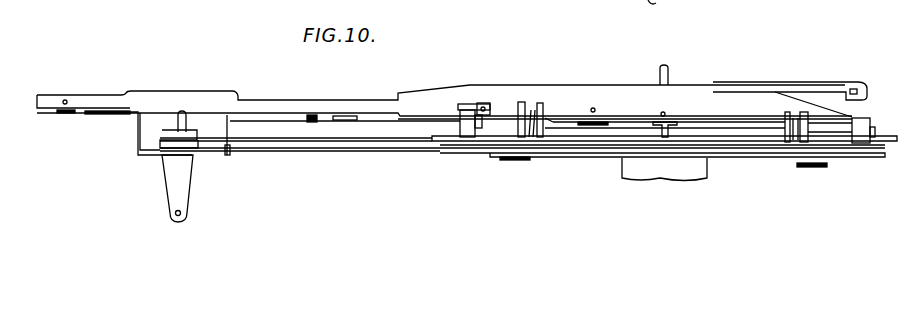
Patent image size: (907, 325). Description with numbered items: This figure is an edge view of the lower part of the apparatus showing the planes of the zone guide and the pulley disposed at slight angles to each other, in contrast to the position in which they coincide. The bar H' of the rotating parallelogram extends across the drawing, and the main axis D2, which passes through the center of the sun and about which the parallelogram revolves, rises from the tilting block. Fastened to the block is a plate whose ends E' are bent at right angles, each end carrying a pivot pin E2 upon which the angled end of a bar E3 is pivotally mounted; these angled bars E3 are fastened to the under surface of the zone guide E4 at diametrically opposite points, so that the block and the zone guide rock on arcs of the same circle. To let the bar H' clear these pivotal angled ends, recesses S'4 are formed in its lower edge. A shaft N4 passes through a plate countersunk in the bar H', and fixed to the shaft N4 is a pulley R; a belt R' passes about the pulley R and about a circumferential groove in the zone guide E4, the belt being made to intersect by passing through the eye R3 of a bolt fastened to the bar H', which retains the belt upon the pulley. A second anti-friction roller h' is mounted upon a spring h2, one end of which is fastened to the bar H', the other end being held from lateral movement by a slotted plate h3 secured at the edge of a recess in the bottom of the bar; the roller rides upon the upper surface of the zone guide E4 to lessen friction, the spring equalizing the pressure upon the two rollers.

The bar H' is at (452, 104).
The spring h2 is at (413, 124).
The belt R' is at (522, 163).
The zone guide E4 is at (777, 155).
The pulley R is at (161, 167).
The shaft N4 is at (187, 116).
The eye R3 is at (228, 155).
The second anti-friction roller h' is at (473, 148).
The slotted plate h3 is at (485, 105).
The pivot pin E2 is at (530, 104).
The recess S'4 is at (674, 88).
The angled bar E3 is at (832, 168).
The end of plate E' is at (667, 98).
The main axis D2 is at (670, 70).